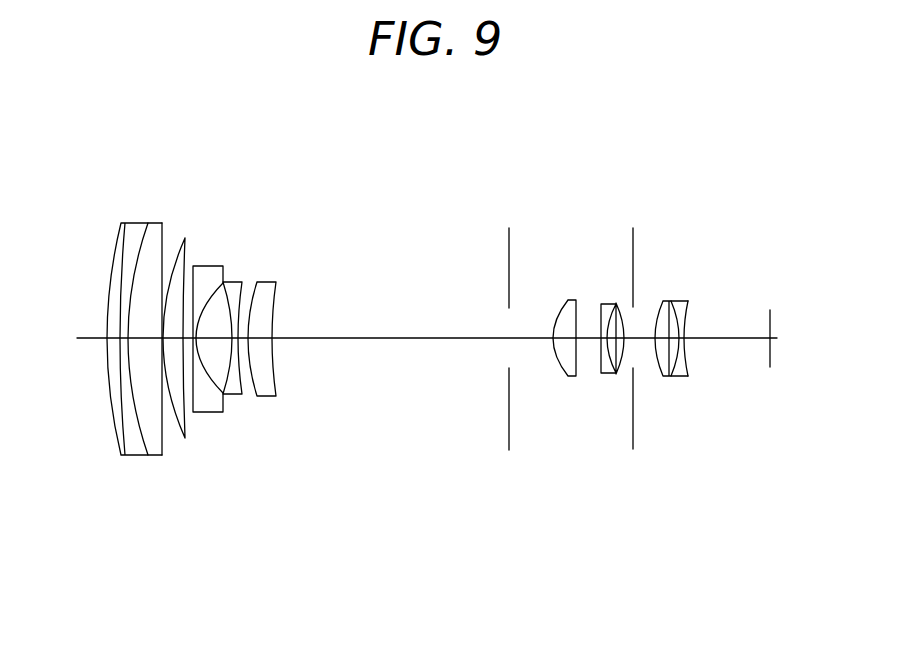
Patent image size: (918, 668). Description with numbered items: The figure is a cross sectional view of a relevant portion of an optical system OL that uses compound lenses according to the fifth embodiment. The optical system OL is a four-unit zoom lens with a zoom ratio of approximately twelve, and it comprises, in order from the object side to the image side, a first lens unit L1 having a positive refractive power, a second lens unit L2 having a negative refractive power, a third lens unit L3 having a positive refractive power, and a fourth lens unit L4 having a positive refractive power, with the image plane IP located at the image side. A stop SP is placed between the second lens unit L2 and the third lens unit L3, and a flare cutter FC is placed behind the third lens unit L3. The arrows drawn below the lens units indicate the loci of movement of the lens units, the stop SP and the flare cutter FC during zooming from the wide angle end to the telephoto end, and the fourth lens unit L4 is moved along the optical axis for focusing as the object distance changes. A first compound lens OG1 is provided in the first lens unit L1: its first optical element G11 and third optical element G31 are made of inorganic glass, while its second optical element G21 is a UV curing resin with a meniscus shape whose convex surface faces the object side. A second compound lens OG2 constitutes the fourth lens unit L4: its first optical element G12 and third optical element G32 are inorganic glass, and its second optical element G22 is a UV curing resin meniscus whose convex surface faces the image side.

The optical system OL is at (57, 120).
The first lens unit L1 is at (132, 377).
The second lens unit L2 is at (437, 624).
The third lens unit L3 is at (586, 622).
The fourth lens unit L4 is at (706, 397).
The first compound lens OG1 is at (132, 312).
The second compound lens OG2 is at (706, 299).
The first optical element G11 is at (121, 223).
The second optical element G21 is at (140, 243).
The third optical element G31 is at (157, 233).
The first optical element G12 is at (690, 301).
The second optical element G22 is at (678, 301).
The third optical element G32 is at (663, 301).
The stop SP is at (511, 622).
The flare cutter FC is at (636, 622).
The image plane IP is at (772, 320).